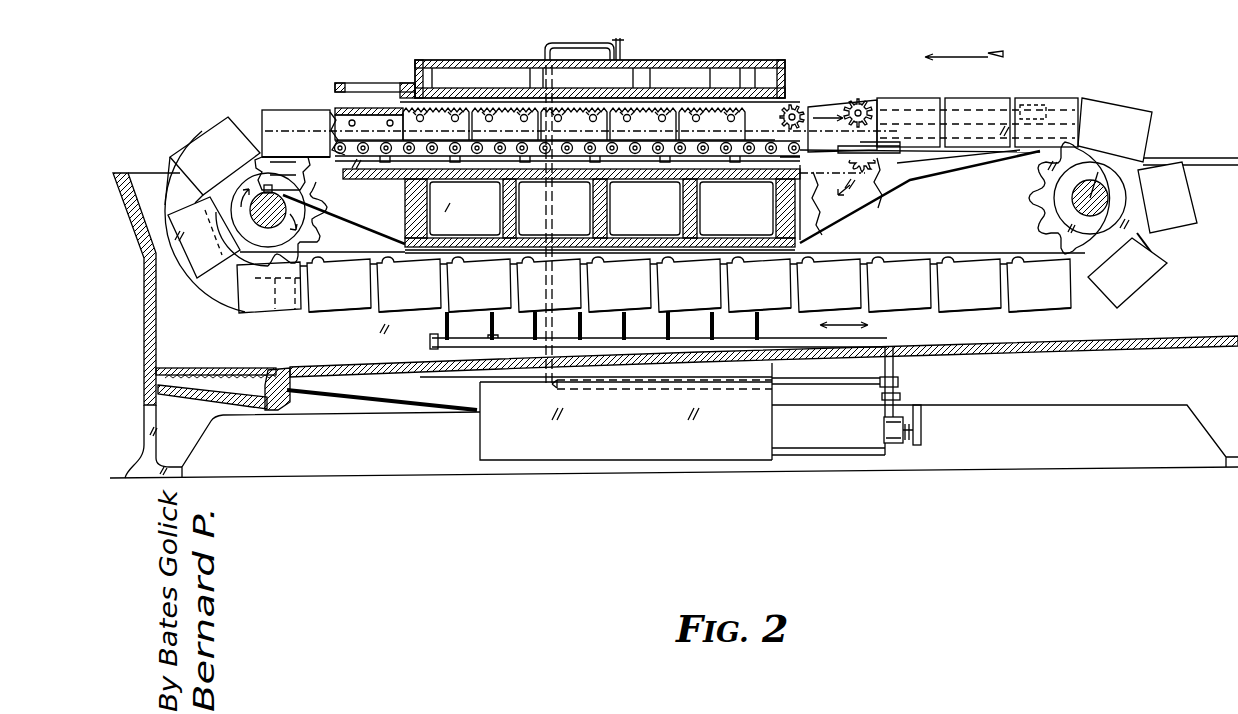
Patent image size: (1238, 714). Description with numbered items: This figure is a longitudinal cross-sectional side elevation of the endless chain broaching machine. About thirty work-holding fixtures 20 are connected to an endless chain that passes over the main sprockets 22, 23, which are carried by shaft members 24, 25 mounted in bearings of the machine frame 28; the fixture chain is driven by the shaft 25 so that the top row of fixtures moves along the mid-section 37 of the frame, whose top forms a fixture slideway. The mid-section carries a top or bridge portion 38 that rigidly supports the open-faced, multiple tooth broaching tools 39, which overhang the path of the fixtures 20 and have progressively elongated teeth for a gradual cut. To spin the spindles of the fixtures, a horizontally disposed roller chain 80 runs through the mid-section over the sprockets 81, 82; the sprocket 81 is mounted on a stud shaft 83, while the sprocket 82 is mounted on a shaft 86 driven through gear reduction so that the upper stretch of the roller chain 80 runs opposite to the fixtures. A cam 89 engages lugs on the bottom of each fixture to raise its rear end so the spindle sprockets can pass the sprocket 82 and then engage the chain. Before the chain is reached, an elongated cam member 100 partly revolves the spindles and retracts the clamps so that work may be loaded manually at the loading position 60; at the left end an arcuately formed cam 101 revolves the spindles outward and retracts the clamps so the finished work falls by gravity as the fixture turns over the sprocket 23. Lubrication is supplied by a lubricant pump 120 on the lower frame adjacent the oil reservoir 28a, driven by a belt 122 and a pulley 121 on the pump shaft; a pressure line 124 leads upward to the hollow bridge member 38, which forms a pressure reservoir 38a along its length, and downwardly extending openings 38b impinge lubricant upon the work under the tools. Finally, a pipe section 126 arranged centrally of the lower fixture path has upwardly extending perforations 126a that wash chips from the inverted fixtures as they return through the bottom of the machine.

The fixtures 20 is at (510, 120).
The main sprocket 22 is at (1052, 191).
The main sprocket 23 is at (290, 305).
The shaft member 24 is at (1092, 212).
The shaft member 25 is at (273, 215).
The machine frame 28 is at (1020, 393).
The oil reservoir 28a is at (750, 433).
The mid-section of the machine frame 37 is at (571, 211).
The top or bridge portion 38 is at (708, 62).
The pressure reservoir 38a is at (725, 72).
The downwardly extending openings 38b is at (556, 92).
The broaching tools 39 is at (775, 100).
The loading position 60 is at (900, 115).
The roller chain 80 is at (858, 222).
The sprocket 81 is at (261, 113).
The sprocket 82 is at (880, 158).
The stud shaft 83 is at (283, 160).
The shaft 86 is at (863, 163).
The cam 89 is at (897, 168).
The elongated cam member 100 is at (1047, 100).
The arcuately formed cam 101 is at (176, 178).
The lubricant pump 120 is at (884, 428).
The pulley 121 is at (922, 443).
The belt 122 is at (922, 413).
The pressure line 124 is at (546, 58).
The pipe section 126 is at (457, 341).
The perforations 126a is at (525, 341).